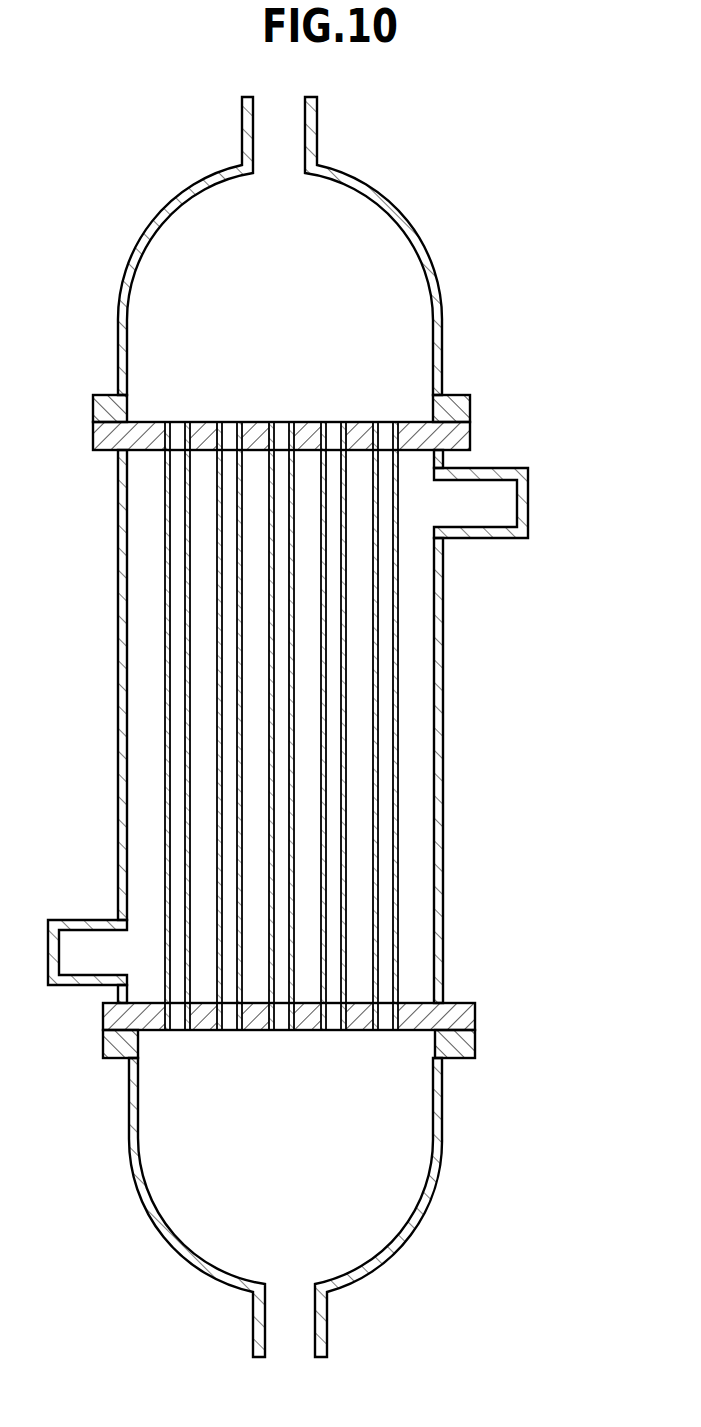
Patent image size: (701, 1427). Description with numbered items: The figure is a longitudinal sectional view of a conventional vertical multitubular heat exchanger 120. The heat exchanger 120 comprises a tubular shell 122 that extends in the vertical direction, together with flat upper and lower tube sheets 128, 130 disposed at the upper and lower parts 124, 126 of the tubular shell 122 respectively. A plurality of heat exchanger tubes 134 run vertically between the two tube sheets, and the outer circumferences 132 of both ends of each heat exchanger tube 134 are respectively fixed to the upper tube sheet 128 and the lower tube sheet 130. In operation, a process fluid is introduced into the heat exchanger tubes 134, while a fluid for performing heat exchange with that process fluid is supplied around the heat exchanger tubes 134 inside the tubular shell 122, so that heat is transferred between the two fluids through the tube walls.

The vertical multitubular heat exchanger 120 is at (518, 183).
The tubular shell 122 is at (443, 729).
The upper part 124 is at (443, 460).
The lower part 126 is at (443, 990).
The upper tube sheet 128 is at (470, 438).
The lower tube sheet 130 is at (476, 1018).
The outer circumferences 132 is at (393, 422).
The heat exchanger tubes 134 is at (397, 639).